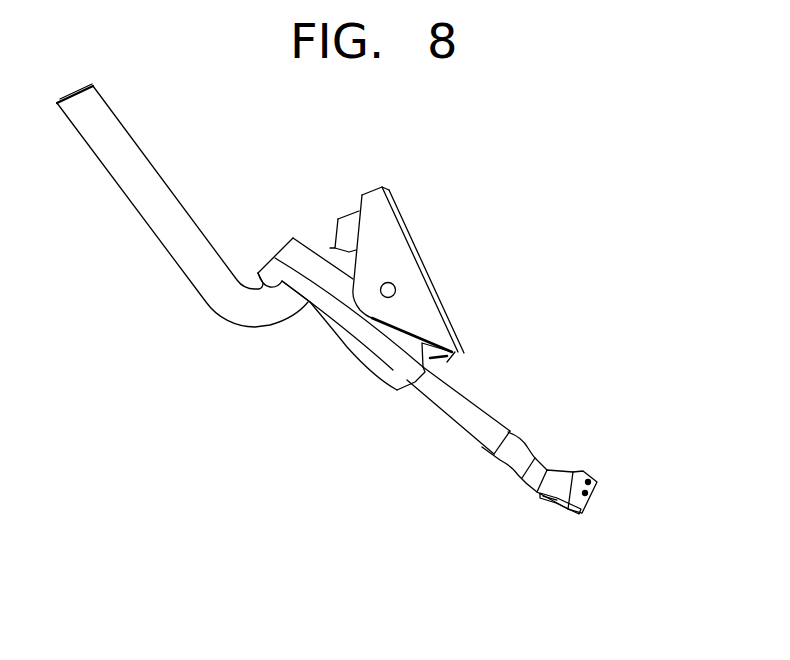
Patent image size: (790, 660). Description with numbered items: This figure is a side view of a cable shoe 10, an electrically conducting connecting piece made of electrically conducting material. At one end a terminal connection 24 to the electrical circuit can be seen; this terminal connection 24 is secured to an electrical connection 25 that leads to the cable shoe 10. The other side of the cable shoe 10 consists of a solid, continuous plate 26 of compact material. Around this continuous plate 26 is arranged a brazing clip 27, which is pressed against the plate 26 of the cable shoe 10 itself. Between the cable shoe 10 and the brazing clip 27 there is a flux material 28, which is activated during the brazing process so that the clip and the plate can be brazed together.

The terminal connection 24 is at (383, 245).
The electrical connection 25 is at (468, 413).
The cable shoe 10 is at (517, 458).
The solid plate 26 is at (560, 473).
The brazing clip 27 is at (597, 490).
The flux material 28 is at (548, 512).